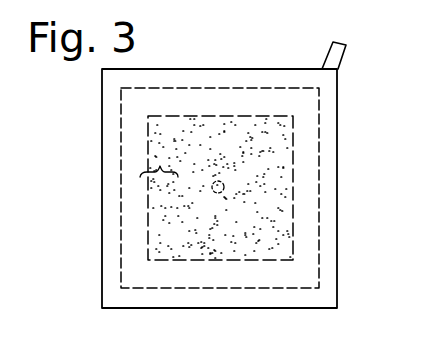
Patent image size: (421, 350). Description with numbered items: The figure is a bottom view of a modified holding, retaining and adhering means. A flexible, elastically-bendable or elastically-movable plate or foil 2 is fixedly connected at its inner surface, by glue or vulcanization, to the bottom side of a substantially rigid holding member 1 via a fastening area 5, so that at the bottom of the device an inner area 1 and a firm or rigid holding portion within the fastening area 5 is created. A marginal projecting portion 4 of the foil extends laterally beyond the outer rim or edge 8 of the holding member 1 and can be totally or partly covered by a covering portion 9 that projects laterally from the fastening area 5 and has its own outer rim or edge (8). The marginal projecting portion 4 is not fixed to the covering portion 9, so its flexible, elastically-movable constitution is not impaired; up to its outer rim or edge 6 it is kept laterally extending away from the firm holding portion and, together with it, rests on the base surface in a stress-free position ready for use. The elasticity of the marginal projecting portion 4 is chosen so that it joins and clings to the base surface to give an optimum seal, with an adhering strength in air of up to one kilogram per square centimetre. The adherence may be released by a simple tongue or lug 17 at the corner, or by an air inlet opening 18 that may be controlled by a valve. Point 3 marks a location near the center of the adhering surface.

The holding member 1 is at (148, 237).
The plate or foil 2 is at (293, 238).
The measuring point 3 is at (227, 192).
The marginal projecting portion 4 is at (308, 218).
The fastening area 5 is at (270, 143).
The outer rim or edge 6 is at (108, 140).
The outer rim or edge 8 is at (182, 260).
The covering portion 9 is at (323, 174).
The tongue or lug 17 is at (347, 52).
The air inlet opening 18 is at (159, 155).